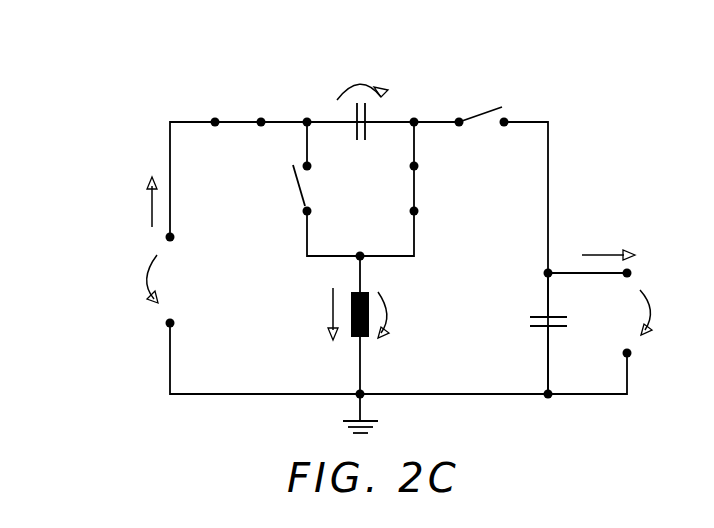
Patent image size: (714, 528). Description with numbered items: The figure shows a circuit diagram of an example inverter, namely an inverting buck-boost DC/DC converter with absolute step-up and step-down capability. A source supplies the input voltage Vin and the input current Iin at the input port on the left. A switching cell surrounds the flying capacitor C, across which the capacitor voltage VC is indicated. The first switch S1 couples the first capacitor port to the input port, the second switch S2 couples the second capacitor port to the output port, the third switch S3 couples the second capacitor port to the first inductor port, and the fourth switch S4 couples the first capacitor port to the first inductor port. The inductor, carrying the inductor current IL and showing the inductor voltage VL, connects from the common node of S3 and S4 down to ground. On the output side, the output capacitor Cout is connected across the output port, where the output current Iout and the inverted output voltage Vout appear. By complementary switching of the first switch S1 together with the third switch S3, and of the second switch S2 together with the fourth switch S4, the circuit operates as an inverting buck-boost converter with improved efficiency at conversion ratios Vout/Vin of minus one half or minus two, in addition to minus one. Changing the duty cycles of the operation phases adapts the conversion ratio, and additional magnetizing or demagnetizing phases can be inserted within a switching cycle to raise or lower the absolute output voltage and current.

The first switch S1 is at (238, 111).
The second switch S2 is at (480, 105).
The third switch S3 is at (428, 188).
The fourth switch S4 is at (286, 185).
The first capacitor C is at (360, 134).
The capacitor voltage VC is at (362, 82).
The input current Iin is at (135, 202).
The input voltage Vin is at (130, 279).
The inductor current IL is at (321, 314).
The inductor voltage VL is at (380, 315).
The output current Iout is at (608, 245).
The output capacitor Cout is at (561, 333).
The output voltage Vout is at (666, 312).